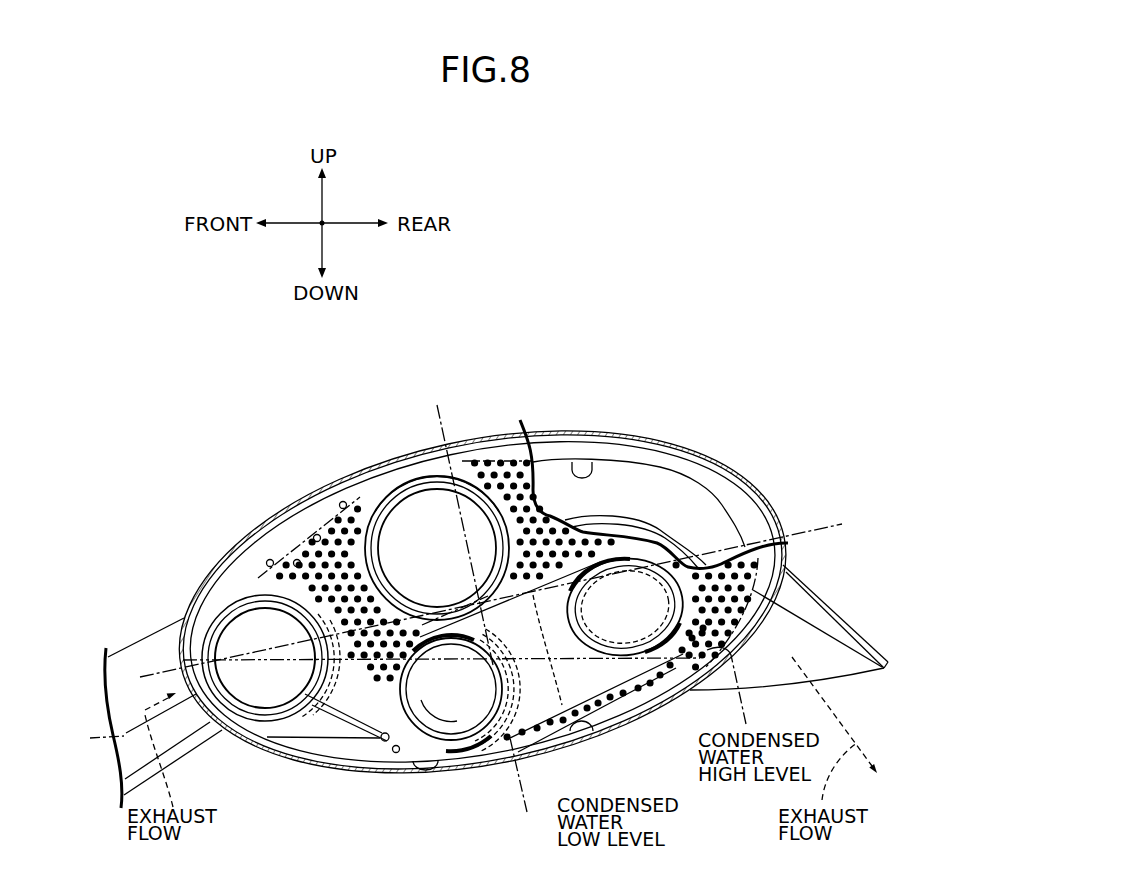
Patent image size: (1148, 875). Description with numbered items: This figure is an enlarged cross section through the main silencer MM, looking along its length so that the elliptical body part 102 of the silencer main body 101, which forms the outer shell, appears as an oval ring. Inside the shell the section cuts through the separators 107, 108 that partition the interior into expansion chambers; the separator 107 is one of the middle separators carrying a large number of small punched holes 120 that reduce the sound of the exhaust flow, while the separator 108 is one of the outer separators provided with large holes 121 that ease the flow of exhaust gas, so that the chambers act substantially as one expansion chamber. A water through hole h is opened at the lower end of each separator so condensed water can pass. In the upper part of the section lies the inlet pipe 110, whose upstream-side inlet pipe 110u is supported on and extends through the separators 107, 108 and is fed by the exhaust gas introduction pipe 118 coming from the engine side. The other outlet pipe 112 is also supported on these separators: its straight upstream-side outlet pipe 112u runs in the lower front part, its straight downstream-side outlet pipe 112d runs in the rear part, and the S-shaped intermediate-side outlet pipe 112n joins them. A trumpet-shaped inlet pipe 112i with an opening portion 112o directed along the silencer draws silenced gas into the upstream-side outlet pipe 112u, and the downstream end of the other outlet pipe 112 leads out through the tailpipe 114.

The main silencer MM is at (513, 364).
The silencer main body 101 is at (322, 488).
The elliptical body part 102 is at (692, 450).
The separator 107 is at (417, 464).
The separator 108 is at (731, 492).
The inlet pipe 110 is at (441, 476).
The upstream-side inlet pipe 110u is at (408, 480).
The other outlet pipe 112 is at (600, 694).
The downstream-side outlet pipe 112d is at (640, 553).
The trumpet-shaped inlet pipe 112i is at (363, 687).
The intermediate-side outlet pipe 112n is at (470, 722).
The opening portion 112o is at (318, 742).
The upstream-side outlet pipe 112u is at (227, 603).
The tailpipe 114 is at (815, 601).
The exhaust gas introduction pipe 118 is at (146, 654).
The small holes 120 is at (270, 560).
The large holes 121 is at (568, 460).
The water through hole h is at (427, 772).